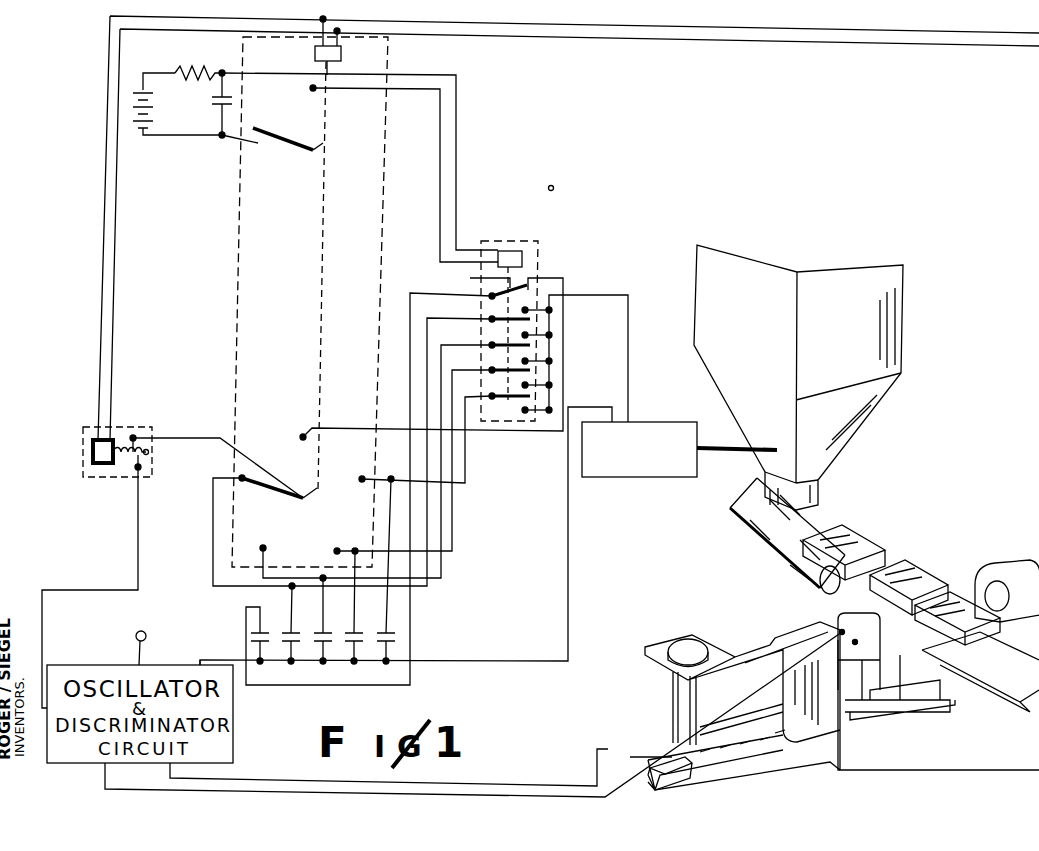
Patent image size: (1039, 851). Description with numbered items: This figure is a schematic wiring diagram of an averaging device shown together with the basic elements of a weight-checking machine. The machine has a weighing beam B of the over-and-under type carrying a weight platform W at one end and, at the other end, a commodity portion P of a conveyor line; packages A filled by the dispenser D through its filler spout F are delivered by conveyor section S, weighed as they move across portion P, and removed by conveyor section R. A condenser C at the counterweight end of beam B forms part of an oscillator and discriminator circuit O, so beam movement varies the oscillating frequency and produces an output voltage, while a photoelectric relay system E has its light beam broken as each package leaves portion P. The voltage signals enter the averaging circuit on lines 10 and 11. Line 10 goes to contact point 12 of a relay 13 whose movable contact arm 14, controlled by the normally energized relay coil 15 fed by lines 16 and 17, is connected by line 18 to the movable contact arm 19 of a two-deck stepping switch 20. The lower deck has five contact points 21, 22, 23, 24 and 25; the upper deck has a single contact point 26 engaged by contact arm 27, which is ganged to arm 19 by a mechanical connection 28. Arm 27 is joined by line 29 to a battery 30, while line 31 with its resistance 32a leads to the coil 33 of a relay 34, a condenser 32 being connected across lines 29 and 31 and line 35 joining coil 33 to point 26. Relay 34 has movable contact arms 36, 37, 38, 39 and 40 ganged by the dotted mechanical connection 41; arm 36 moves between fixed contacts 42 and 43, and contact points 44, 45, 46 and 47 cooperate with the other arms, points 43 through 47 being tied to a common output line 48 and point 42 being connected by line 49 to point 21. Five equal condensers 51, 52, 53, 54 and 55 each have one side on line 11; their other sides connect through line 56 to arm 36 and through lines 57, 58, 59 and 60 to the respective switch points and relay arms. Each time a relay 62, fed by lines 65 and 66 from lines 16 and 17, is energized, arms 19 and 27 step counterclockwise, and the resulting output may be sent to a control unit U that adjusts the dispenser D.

The line 10 is at (102, 591).
The line 11 is at (205, 659).
The contact point 12 is at (141, 469).
The relay 13 is at (128, 427).
The movable contact arm 14 is at (133, 462).
The relay coil 15 is at (96, 464).
The line 16 is at (661, 35).
The line 17 is at (580, 38).
The line 18 is at (190, 437).
The movable contact arm 19 is at (265, 502).
The stepping switch 20 is at (391, 222).
The contact point 21 is at (302, 440).
The contact point 22 is at (240, 476).
The contact point 23 is at (265, 546).
The contact point 24 is at (337, 548).
The contact point 25 is at (360, 482).
The contact point 26 is at (312, 91).
The contact arm 27 is at (279, 141).
The mechanical connection 28 is at (327, 292).
The line 29 is at (257, 144).
The battery 30 is at (139, 86).
The line 31 is at (270, 77).
The condenser 32 is at (212, 104).
The resistance 32a is at (190, 64).
The coil 33 is at (513, 247).
The relay 34 is at (548, 239).
The line 35 is at (414, 92).
The movable contact arm 36 is at (490, 298).
The movable contact arm 37 is at (506, 322).
The movable contact arm 38 is at (490, 348).
The movable contact arm 39 is at (490, 373).
The movable contact arm 40 is at (506, 407).
The mechanical connection 41 is at (476, 279).
The fixed contact 42 is at (532, 291).
The fixed contact 43 is at (528, 309).
The contact point 44 is at (528, 335).
The contact point 45 is at (528, 361).
The contact point 46 is at (528, 385).
The contact point 47 is at (528, 410).
The common line 48 is at (603, 293).
The line 49 is at (508, 432).
The condenser 51 is at (262, 632).
The condenser 52 is at (294, 632).
The condenser 53 is at (326, 632).
The condenser 54 is at (357, 632).
The condenser 55 is at (388, 632).
The line 56 is at (301, 685).
The line 57 is at (228, 587).
The line 58 is at (283, 574).
The line 59 is at (453, 521).
The line 60 is at (381, 477).
The relay 62 is at (315, 60).
The line 65 is at (318, 42).
The line 66 is at (341, 43).
The packages A is at (912, 568).
The weighing beam B is at (762, 680).
The condenser C is at (651, 772).
The dispenser D is at (905, 316).
The photoelectric relay system E is at (838, 620).
The filler spout F is at (848, 447).
The commodity portion P is at (895, 630).
The conveyor section R is at (995, 695).
The conveyor section S is at (765, 555).
The control unit U is at (659, 420).
The weight platform W is at (687, 653).
The oscillator and discriminator circuit O is at (141, 648).